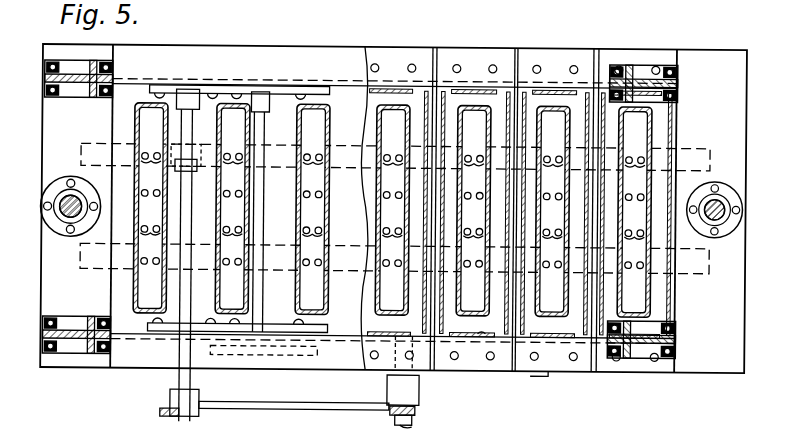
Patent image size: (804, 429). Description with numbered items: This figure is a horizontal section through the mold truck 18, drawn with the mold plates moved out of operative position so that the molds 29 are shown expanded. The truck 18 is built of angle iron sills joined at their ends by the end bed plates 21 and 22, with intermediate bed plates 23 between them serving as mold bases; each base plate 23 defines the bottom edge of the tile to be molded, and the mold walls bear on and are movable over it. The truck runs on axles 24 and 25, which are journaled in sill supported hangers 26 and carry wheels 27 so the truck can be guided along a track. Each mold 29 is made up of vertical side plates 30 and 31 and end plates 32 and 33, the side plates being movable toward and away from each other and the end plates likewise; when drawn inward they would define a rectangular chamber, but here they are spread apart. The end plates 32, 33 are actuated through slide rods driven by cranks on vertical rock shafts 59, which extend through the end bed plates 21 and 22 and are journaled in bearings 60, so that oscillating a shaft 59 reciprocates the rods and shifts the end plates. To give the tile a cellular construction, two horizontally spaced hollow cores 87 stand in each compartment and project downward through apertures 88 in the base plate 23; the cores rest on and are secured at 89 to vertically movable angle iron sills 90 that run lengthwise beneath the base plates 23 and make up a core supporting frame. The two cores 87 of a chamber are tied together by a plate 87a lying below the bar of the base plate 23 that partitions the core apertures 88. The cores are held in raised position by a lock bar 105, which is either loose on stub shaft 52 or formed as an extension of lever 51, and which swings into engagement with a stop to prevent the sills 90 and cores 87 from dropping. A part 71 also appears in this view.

The truck 18 is at (621, 40).
The end bed plate 21 is at (47, 112).
The end bed plate 22 is at (735, 126).
The intermediate bed plate 23 is at (606, 56).
The axle 24 is at (274, 368).
The axle 25 is at (551, 375).
The hanger 26 is at (288, 96).
The wheel 27 is at (323, 368).
The mold 29 is at (615, 322).
The side plate 30 is at (450, 112).
The side plate 31 is at (500, 108).
The end plate 32 is at (486, 334).
The end plate 33 is at (465, 90).
The lever 51 is at (419, 405).
The stub shaft 52 is at (412, 424).
The rock shaft 59 is at (60, 218).
The bearing 60 is at (56, 195).
The lever 71 is at (150, 423).
The hollow core 87 is at (386, 284).
The tie plate 87a is at (235, 208).
The aperture 88 is at (576, 133).
The securing point 89 is at (481, 152).
The angle iron sill 90 is at (350, 165).
The lock bar 105 is at (294, 414).